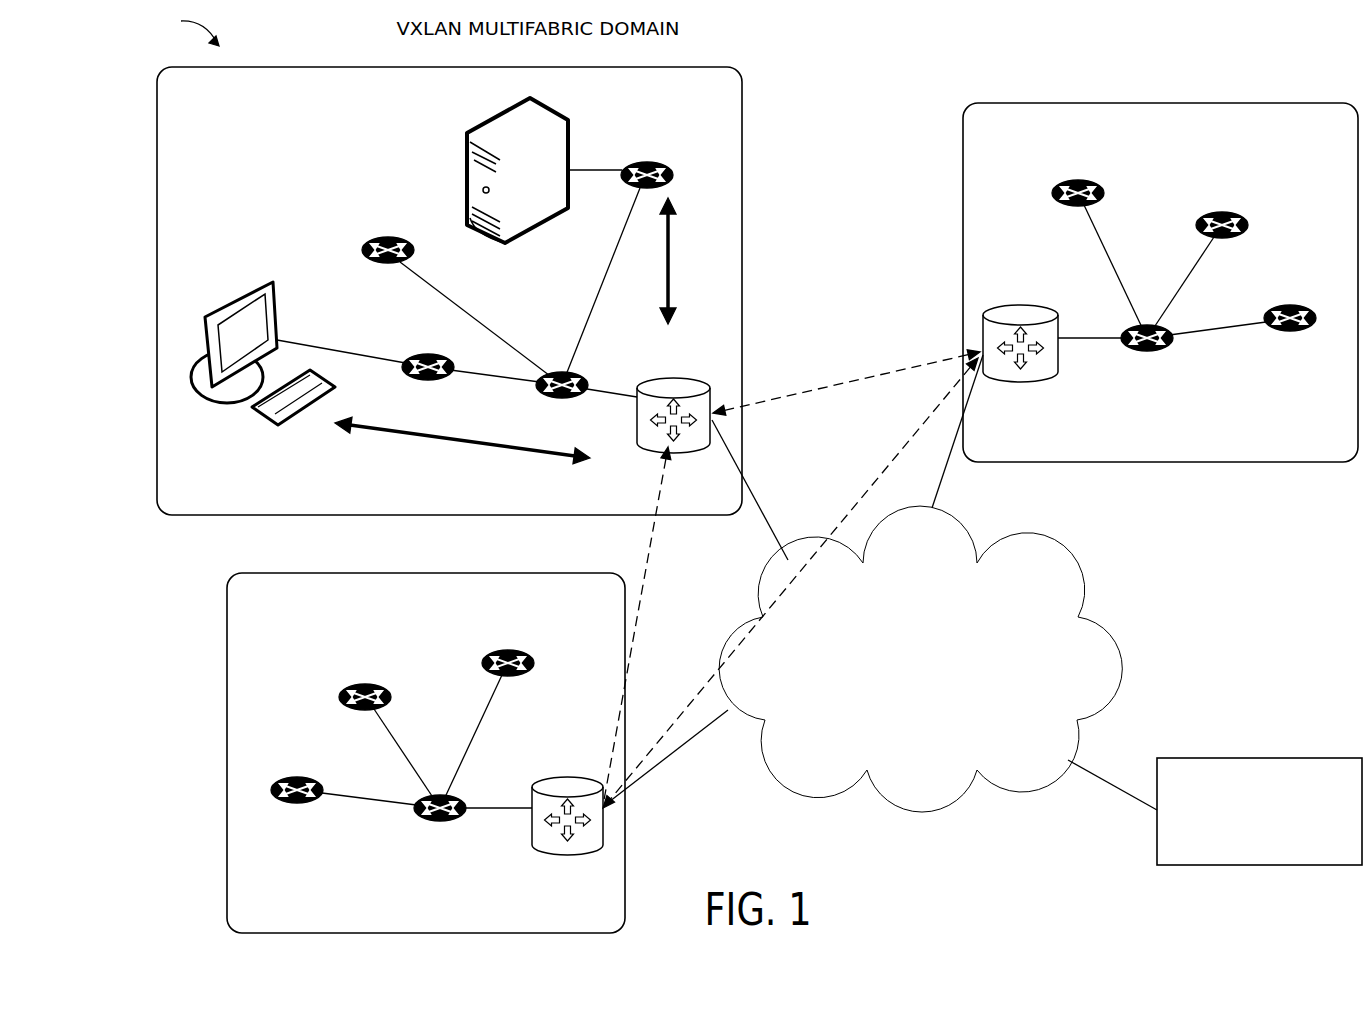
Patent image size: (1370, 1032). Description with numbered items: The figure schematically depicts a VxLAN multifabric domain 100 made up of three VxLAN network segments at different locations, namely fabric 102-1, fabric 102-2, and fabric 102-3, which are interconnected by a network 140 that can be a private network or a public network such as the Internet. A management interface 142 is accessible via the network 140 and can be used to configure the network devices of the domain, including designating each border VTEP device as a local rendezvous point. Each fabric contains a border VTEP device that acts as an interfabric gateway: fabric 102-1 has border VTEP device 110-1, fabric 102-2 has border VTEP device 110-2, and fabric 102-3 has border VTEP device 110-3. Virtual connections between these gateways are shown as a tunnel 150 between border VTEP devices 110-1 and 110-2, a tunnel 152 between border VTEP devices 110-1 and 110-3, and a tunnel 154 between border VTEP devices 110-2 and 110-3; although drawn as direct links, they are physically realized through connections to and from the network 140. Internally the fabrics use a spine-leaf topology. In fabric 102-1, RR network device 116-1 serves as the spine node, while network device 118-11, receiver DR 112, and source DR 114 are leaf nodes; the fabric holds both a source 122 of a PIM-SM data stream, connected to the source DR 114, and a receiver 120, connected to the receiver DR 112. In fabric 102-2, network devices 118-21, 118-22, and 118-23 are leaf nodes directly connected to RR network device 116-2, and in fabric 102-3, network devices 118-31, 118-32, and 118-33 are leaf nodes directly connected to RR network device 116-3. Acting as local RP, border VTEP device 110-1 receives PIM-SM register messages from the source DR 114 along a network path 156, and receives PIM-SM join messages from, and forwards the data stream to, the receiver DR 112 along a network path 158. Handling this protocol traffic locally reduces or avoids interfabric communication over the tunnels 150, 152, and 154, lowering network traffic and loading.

The VxLAN multifabric domain 100 is at (178, 30).
The fabric 1 102-1 is at (522, 504).
The fabric 2 102-2 is at (1233, 451).
The fabric 3 102-3 is at (498, 922).
The border VTEP device 110-1 is at (673, 380).
The border VTEP device 110-2 is at (1024, 308).
The border VTEP device 110-3 is at (570, 778).
The receiver DR 112 is at (428, 353).
The source DR 114 is at (654, 158).
The RR network device 116-1 is at (563, 400).
The RR network device 116-2 is at (1147, 352).
The RR network device 116-3 is at (440, 821).
The network device 118-11 is at (398, 237).
The network device 118-21 is at (1086, 181).
The network device 118-22 is at (1224, 212).
The network device 118-23 is at (1291, 306).
The network device 118-31 is at (509, 651).
The network device 118-32 is at (370, 683).
The network device 118-33 is at (300, 778).
The receiver 120 is at (230, 237).
The source 122 is at (491, 122).
The network 140 is at (905, 686).
The management interface 142 is at (1244, 851).
The tunnel 150 is at (858, 376).
The tunnel 152 is at (662, 547).
The tunnel 154 is at (915, 428).
The network path 156 is at (669, 270).
The network path 158 is at (360, 428).